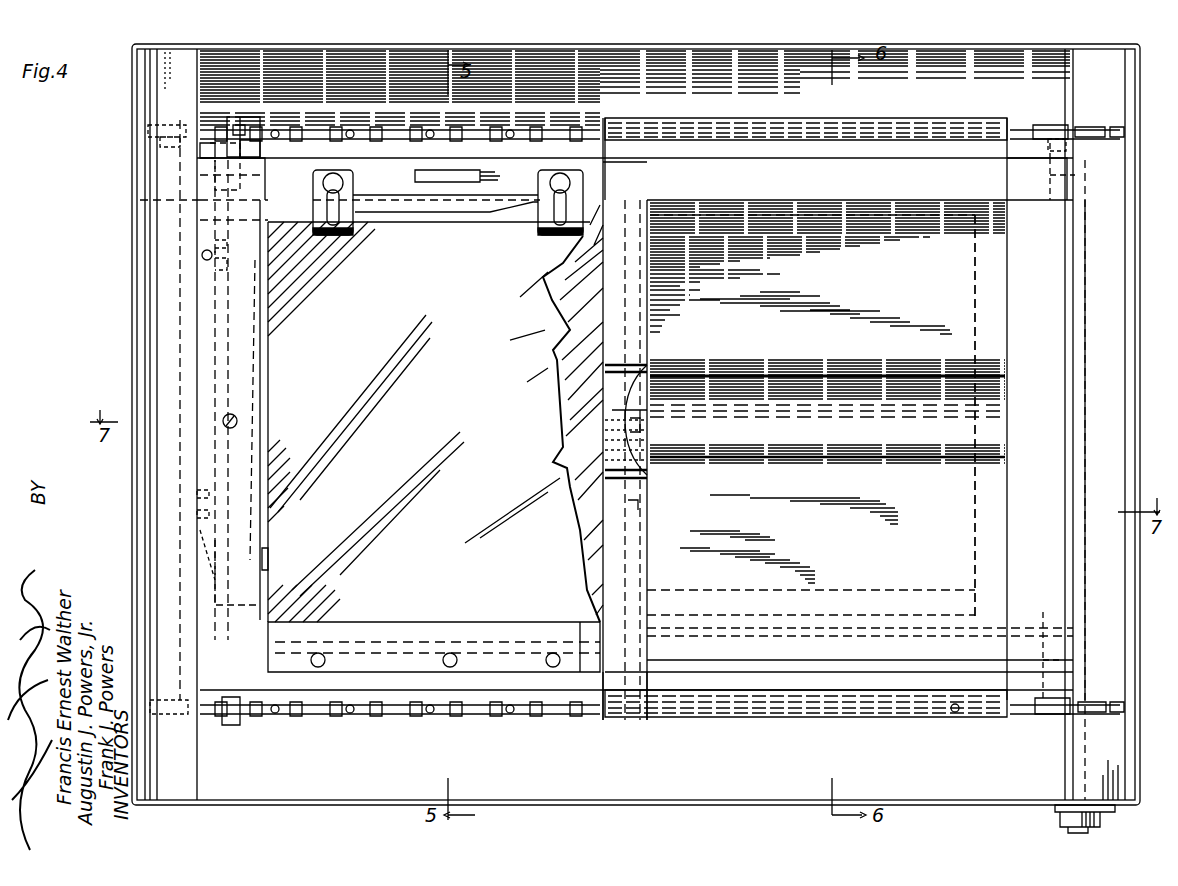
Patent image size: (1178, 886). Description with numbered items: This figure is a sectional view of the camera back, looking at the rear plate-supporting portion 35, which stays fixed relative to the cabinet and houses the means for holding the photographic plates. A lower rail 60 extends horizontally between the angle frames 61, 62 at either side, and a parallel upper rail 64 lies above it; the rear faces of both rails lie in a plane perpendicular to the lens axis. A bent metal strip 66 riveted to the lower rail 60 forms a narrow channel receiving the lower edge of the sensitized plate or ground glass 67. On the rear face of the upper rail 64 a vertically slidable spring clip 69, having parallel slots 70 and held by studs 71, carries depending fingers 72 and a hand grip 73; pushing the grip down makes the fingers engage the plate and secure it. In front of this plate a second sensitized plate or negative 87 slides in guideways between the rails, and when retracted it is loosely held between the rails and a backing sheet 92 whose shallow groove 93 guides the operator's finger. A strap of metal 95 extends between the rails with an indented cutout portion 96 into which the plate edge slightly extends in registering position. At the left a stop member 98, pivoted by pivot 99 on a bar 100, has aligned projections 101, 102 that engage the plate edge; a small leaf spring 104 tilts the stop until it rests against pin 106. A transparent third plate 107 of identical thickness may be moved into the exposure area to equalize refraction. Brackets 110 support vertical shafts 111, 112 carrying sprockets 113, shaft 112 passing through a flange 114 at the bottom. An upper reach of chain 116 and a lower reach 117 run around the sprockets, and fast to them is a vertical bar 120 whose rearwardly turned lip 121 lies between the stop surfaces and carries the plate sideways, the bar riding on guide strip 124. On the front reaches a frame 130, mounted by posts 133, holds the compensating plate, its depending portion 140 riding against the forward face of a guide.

The rear plate-supporting portion 35 is at (129, 296).
The rail 60 is at (321, 422).
The angle frame 61 is at (182, 782).
The angle frame 62 is at (1075, 757).
The upper rail 64 is at (382, 227).
The bent metal strip 66 is at (405, 596).
The sensitized plate or ground glass 67 is at (560, 552).
The spring clip 69 is at (429, 200).
The parallel slots 70 is at (342, 200).
The studs 71 is at (342, 177).
The depending fingers 72 is at (355, 234).
The hand grip 73 is at (455, 172).
The second sensitized plate or negative 87 is at (592, 418).
The backing sheet 92 is at (827, 411).
The groove or channel 93 is at (860, 498).
The strap of metal 95 is at (615, 592).
The cutout portion 96 is at (643, 382).
The stop member 98 is at (238, 355).
The pivot 99 is at (240, 421).
The bar 100 is at (247, 196).
The projection 101 is at (290, 275).
The projection 102 is at (270, 565).
The leaf spring 104 is at (210, 575).
The pin 106 is at (202, 253).
The third plate 107 is at (975, 258).
The brackets 110 is at (215, 175).
The vertical shaft 111 is at (180, 313).
The vertical shaft 112 is at (1067, 375).
The sprockets 113 is at (145, 125).
The flange 114 is at (1098, 819).
The reach of chain 116 is at (490, 128).
The reach of chain 117 is at (356, 716).
The bar 120 is at (262, 155).
The rearwardly turned lip 121 is at (243, 124).
The guide strip 124 is at (700, 690).
The frame 130 is at (809, 120).
The posts 133 is at (648, 130).
The depending portion 140 is at (787, 715).